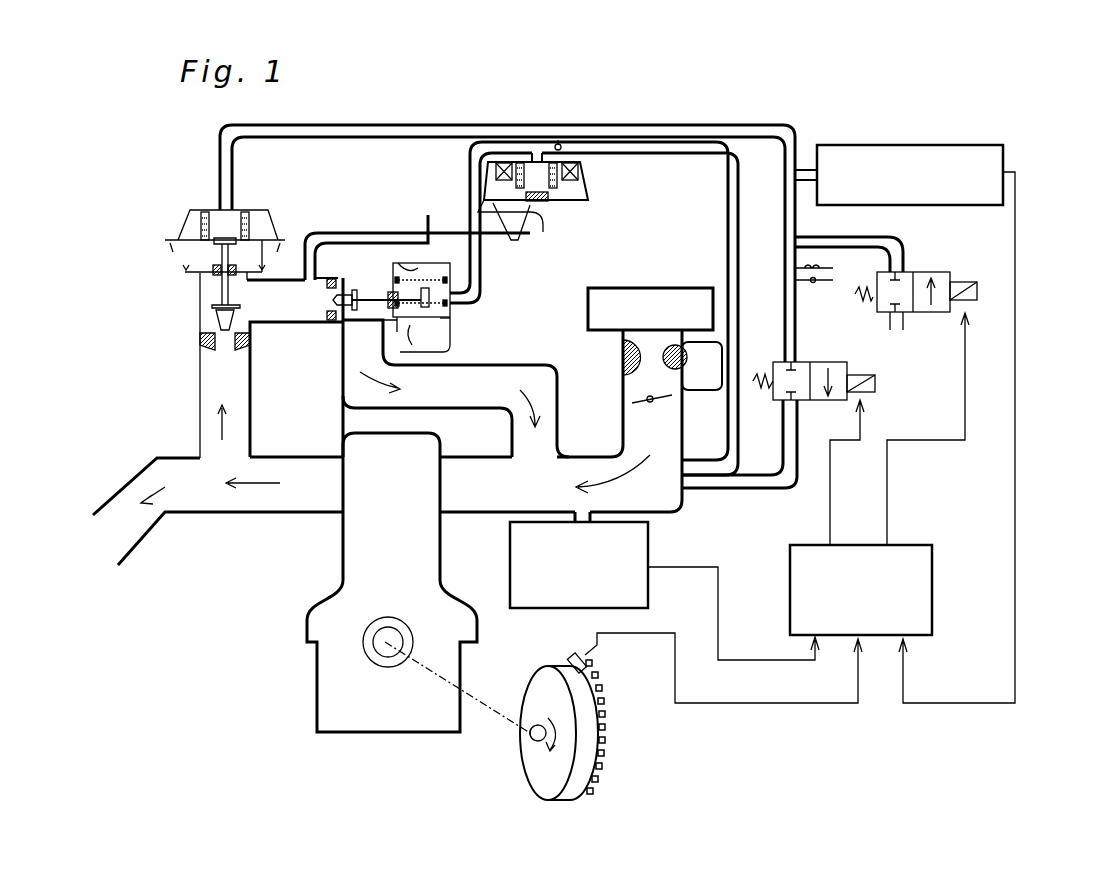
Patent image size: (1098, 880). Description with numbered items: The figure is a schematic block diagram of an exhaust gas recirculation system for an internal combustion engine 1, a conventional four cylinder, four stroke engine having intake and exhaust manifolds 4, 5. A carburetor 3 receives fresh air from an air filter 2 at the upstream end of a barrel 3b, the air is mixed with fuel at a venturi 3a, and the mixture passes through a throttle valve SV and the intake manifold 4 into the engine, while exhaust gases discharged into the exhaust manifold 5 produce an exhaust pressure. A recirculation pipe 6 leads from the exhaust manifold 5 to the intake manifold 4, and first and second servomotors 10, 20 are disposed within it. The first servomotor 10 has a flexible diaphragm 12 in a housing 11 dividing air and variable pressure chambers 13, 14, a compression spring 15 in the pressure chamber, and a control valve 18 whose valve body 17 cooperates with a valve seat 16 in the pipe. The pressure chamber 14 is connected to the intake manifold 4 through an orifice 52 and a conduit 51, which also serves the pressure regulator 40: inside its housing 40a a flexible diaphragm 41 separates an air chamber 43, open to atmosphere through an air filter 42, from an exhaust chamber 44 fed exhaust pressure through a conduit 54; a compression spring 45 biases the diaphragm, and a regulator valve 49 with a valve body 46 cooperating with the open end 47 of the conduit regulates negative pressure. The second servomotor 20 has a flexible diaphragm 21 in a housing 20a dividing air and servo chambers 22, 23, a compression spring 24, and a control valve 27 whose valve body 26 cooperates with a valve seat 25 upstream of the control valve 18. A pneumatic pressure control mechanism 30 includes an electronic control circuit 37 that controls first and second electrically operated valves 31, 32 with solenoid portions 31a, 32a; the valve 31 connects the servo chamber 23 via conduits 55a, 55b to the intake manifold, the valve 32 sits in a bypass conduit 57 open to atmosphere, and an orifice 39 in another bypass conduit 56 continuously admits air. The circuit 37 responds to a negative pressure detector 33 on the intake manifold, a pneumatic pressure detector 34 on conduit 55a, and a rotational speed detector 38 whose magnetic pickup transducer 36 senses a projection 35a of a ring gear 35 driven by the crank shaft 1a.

The internal combustion engine 1 is at (400, 487).
The crank shaft 1a is at (378, 652).
The air filter 2 is at (658, 316).
The carburetor 3 is at (708, 373).
The venturi 3a is at (623, 350).
The barrel 3b is at (628, 382).
The intake manifold 4 is at (483, 491).
The exhaust manifold 5 is at (318, 491).
The recirculation pipe 6 is at (342, 362).
The first servomotor 10 is at (390, 285).
The housing 11 is at (432, 262).
The flexible diaphragm 12 is at (432, 335).
The air chamber 13 is at (415, 322).
The variable pressure chamber 14 is at (437, 333).
The compression spring 15 is at (398, 268).
The valve seat 16 is at (332, 278).
The valve body 17 is at (345, 296).
The control valve 18 is at (327, 306).
The second servomotor 20 is at (451, 291).
The housing 20a is at (278, 232).
The flexible diaphragm 21 is at (185, 230).
The air chamber 22 is at (190, 272).
The servo chamber 23 is at (265, 220).
The compression spring 24 is at (248, 215).
The valve seat 25 is at (208, 348).
The valve body 26 is at (222, 325).
The control valve 27 is at (188, 341).
The pneumatic pressure control mechanism 30 is at (1025, 513).
The first electrically operated valve 31 is at (805, 362).
The solenoid 31a is at (865, 375).
The second electrically operated valve 32 is at (920, 275).
The solenoid 32a is at (965, 282).
The negative pressure detector 33 is at (510, 540).
The pneumatic pressure detector 34 is at (930, 145).
The ring gear 35 is at (530, 733).
The projection 35a is at (565, 686).
The magnetic pickup transducer 36 is at (568, 655).
The electronic control circuit 37 is at (932, 582).
The rotational speed detector 38 is at (614, 695).
The orifice 39 is at (816, 283).
The pressure regulator 40 is at (538, 196).
The housing 40a is at (492, 203).
The flexible diaphragm 41 is at (478, 200).
The air filter 42 is at (585, 172).
The air chamber 43 is at (582, 190).
The exhaust chamber 44 is at (545, 215).
The compression spring 45 is at (490, 163).
The valve body 46 is at (553, 208).
The open end 47 is at (548, 196).
The regulator valve 49 is at (522, 213).
The conduit 51 is at (727, 182).
The orifice 52 is at (567, 136).
The conduit 54 is at (332, 231).
The conduit 55a is at (791, 201).
The conduit 55b is at (729, 477).
The bypass conduit 56 is at (828, 266).
The bypass conduit 57 is at (851, 248).
The throttle valve SV is at (640, 403).